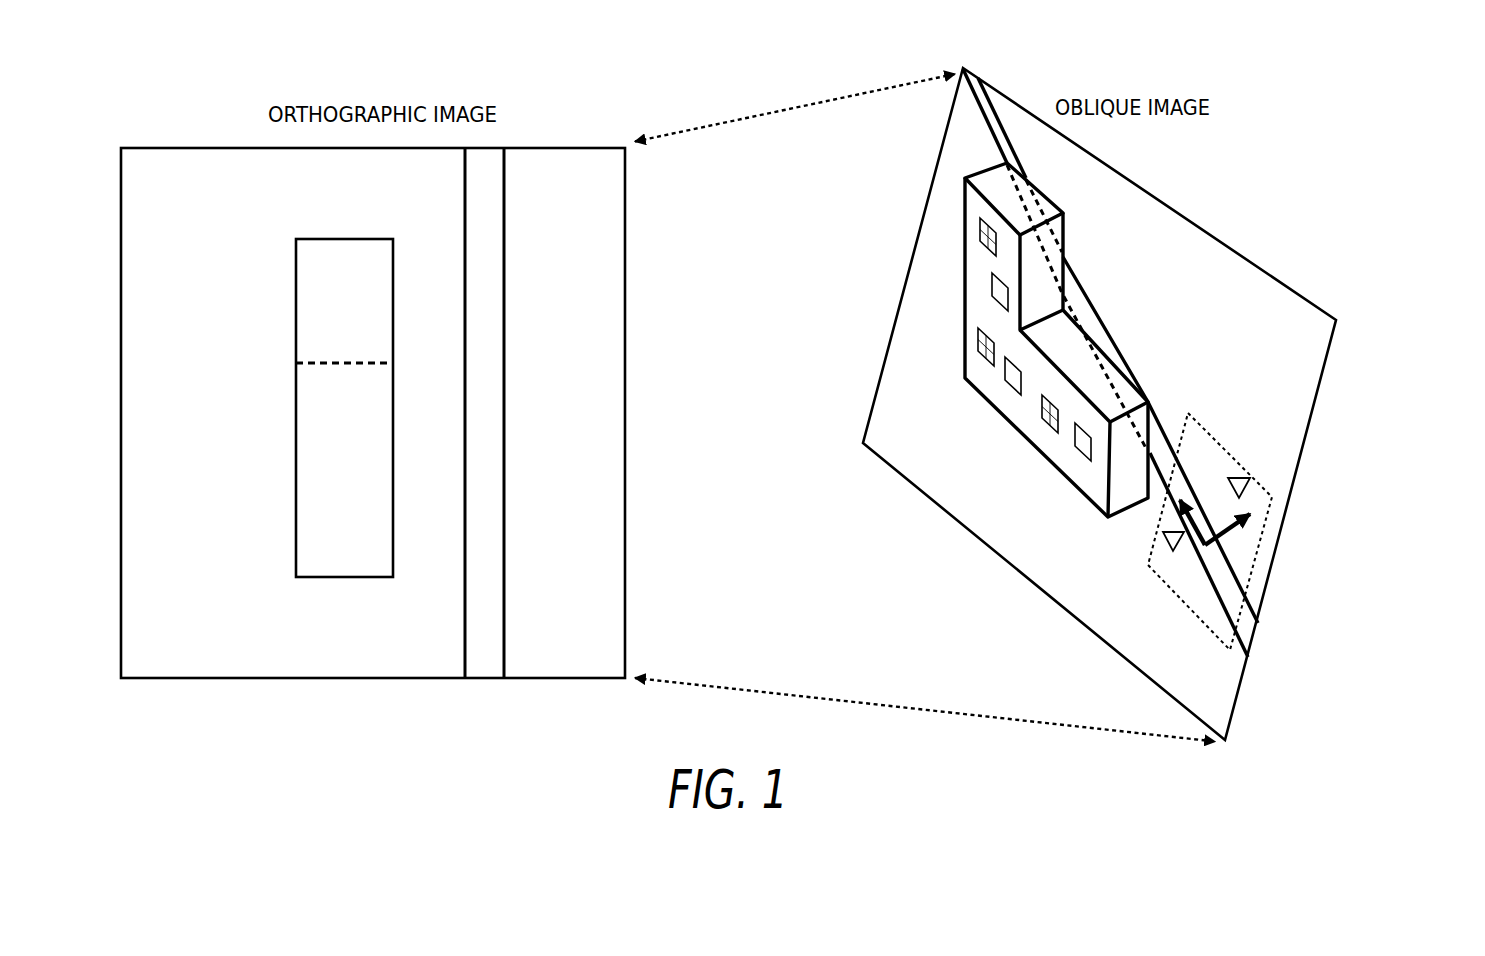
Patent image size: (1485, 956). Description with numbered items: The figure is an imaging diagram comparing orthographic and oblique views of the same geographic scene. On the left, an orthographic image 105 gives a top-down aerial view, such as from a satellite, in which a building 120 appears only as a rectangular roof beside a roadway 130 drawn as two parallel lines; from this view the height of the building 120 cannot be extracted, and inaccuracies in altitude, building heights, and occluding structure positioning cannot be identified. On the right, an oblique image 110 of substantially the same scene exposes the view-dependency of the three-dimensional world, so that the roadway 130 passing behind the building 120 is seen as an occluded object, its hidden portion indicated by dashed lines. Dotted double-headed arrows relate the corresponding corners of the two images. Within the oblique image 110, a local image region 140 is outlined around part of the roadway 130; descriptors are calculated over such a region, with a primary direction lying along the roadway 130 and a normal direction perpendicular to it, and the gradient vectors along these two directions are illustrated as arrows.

The orthographic image 105 is at (164, 180).
The oblique image 110 is at (1322, 342).
The building 120 is at (1058, 492).
The roadway 130 is at (980, 130).
The local image region 140 is at (1262, 450).